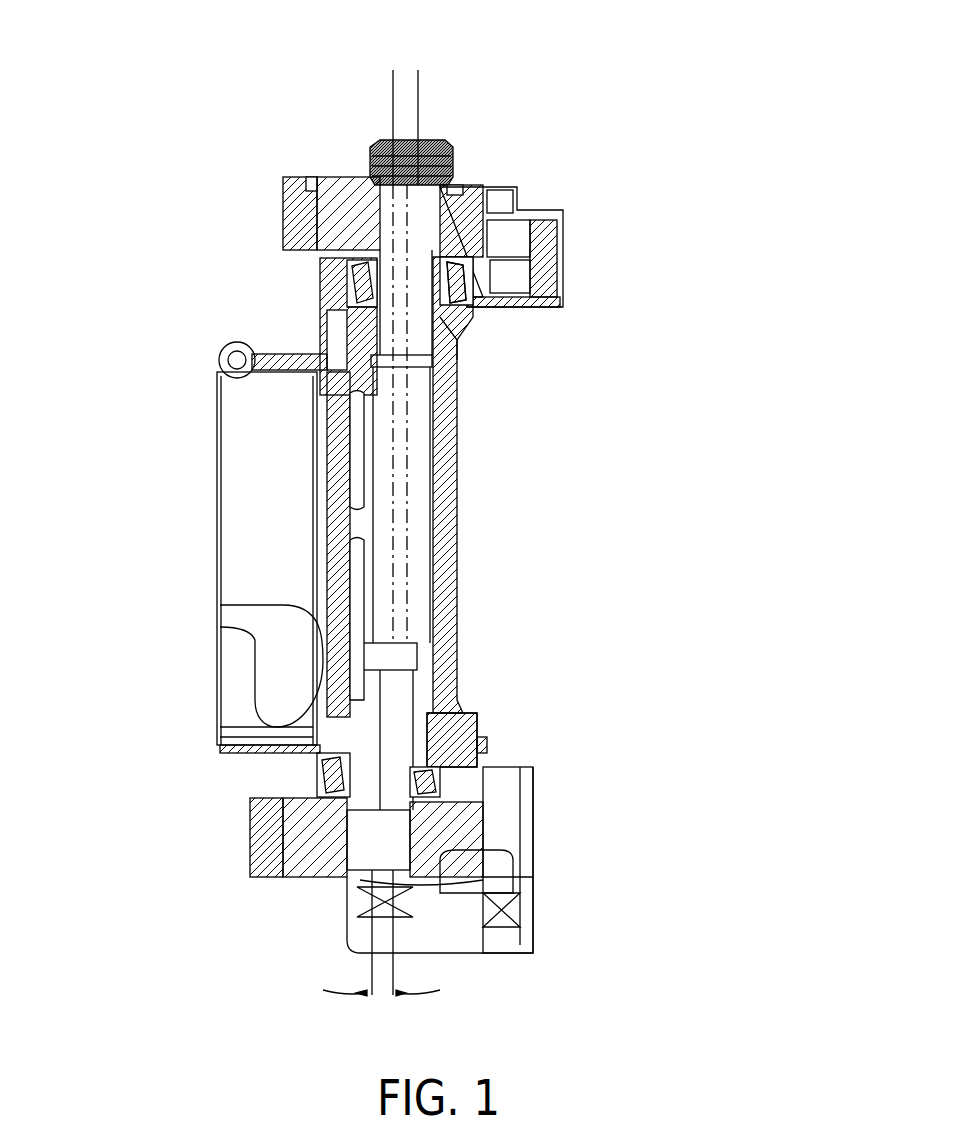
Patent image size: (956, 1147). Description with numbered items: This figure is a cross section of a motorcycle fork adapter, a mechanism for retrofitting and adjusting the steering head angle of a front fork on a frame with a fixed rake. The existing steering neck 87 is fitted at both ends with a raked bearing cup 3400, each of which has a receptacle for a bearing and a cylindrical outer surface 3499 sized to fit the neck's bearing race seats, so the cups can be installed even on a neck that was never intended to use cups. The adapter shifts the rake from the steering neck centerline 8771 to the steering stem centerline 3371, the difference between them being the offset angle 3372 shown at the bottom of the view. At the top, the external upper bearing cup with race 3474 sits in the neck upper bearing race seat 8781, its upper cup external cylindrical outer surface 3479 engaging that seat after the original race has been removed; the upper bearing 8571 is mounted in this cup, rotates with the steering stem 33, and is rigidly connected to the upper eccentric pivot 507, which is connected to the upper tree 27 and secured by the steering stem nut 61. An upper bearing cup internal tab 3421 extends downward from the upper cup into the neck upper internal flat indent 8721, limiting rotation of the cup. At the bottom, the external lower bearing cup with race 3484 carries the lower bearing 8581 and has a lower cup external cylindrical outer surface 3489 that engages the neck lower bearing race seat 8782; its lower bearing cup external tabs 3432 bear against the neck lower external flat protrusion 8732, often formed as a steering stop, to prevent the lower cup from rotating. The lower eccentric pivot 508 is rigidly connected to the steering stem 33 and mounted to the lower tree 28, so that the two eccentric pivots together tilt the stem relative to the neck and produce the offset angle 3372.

The upper tree 27 is at (291, 223).
The lower tree 28 is at (250, 860).
The steering stem 33 is at (407, 530).
The steering stem nut 61 is at (453, 147).
The steering neck 87 is at (457, 477).
The upper eccentric pivot 507 is at (340, 197).
The lower eccentric pivot 508 is at (280, 873).
The steering stem centerline 3371 is at (418, 80).
The offset angle 3372 is at (381, 1011).
The bearing cup 3400 is at (465, 337).
The upper bearing cup internal tab 3421 is at (327, 370).
The lower bearing cup external tabs 3432 is at (480, 737).
The external upper bearing cup with race 3474 is at (330, 297).
The upper cup external cylindrical outer surface 3479 is at (320, 277).
The external lower bearing cup with race 3484 is at (460, 770).
The lower cup external cylindrical outer surface 3489 is at (285, 720).
The cylindrical outer surface 3499 is at (463, 307).
The upper bearing 8571 is at (467, 300).
The lower bearing 8581 is at (313, 783).
The neck upper internal flat indent 8721 is at (325, 408).
The neck lower external flat protrusion 8732 is at (490, 747).
The steering neck centerline 8771 is at (393, 70).
The neck upper bearing race seat 8781 is at (320, 333).
The neck lower bearing race seat 8782 is at (327, 737).